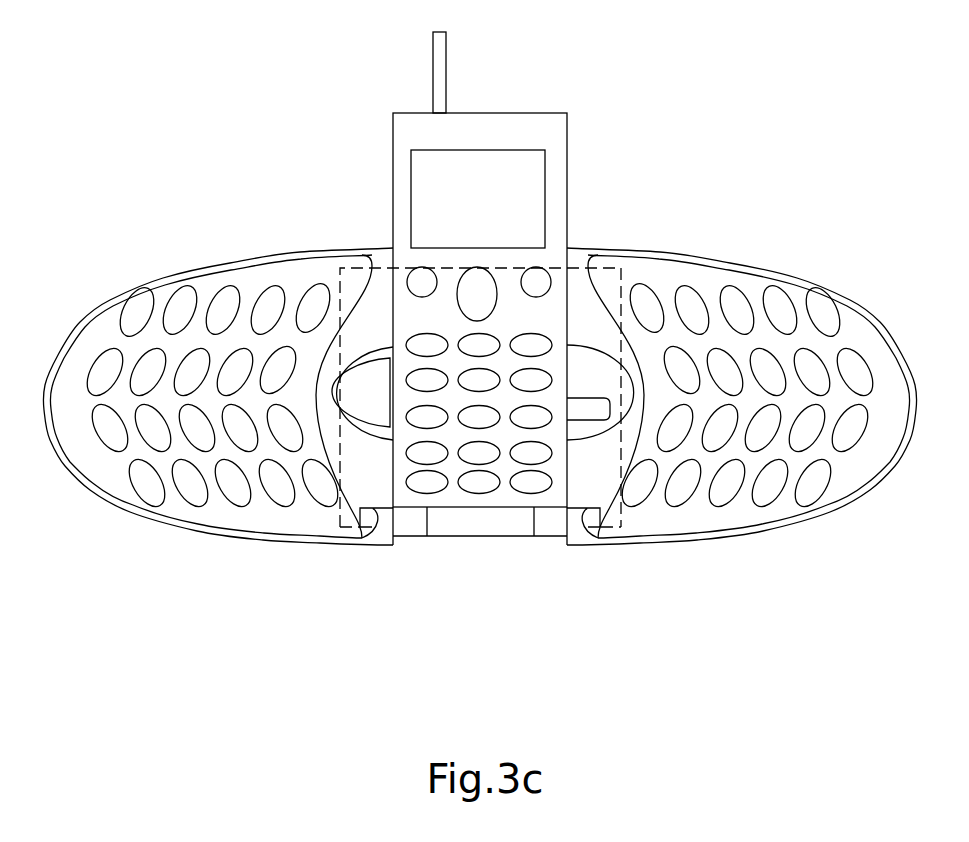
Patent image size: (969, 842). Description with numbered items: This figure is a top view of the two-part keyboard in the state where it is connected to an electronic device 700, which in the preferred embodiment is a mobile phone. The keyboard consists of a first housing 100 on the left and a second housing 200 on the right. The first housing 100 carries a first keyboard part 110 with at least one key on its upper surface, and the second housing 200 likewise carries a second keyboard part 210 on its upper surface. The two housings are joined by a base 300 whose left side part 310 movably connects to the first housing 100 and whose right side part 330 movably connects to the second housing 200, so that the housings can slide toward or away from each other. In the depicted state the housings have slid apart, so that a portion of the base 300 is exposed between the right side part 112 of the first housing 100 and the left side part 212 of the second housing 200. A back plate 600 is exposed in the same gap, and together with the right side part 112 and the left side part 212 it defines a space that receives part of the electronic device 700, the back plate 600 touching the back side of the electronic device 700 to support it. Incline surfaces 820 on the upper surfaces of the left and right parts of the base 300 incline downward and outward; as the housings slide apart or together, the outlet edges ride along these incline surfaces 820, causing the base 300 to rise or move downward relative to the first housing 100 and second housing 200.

The first housing 100 is at (80, 450).
The first keyboard part 110 is at (153, 498).
The right side part 112 is at (393, 250).
The second housing 200 is at (847, 482).
The second keyboard part 210 is at (760, 492).
The left side part 212 is at (576, 287).
The base 300 is at (472, 524).
The left side part 310 is at (442, 524).
The right side part 330 is at (513, 524).
The back plate 600 is at (577, 287).
The electronic device 700 is at (503, 128).
The incline surfaces 820 is at (410, 524).